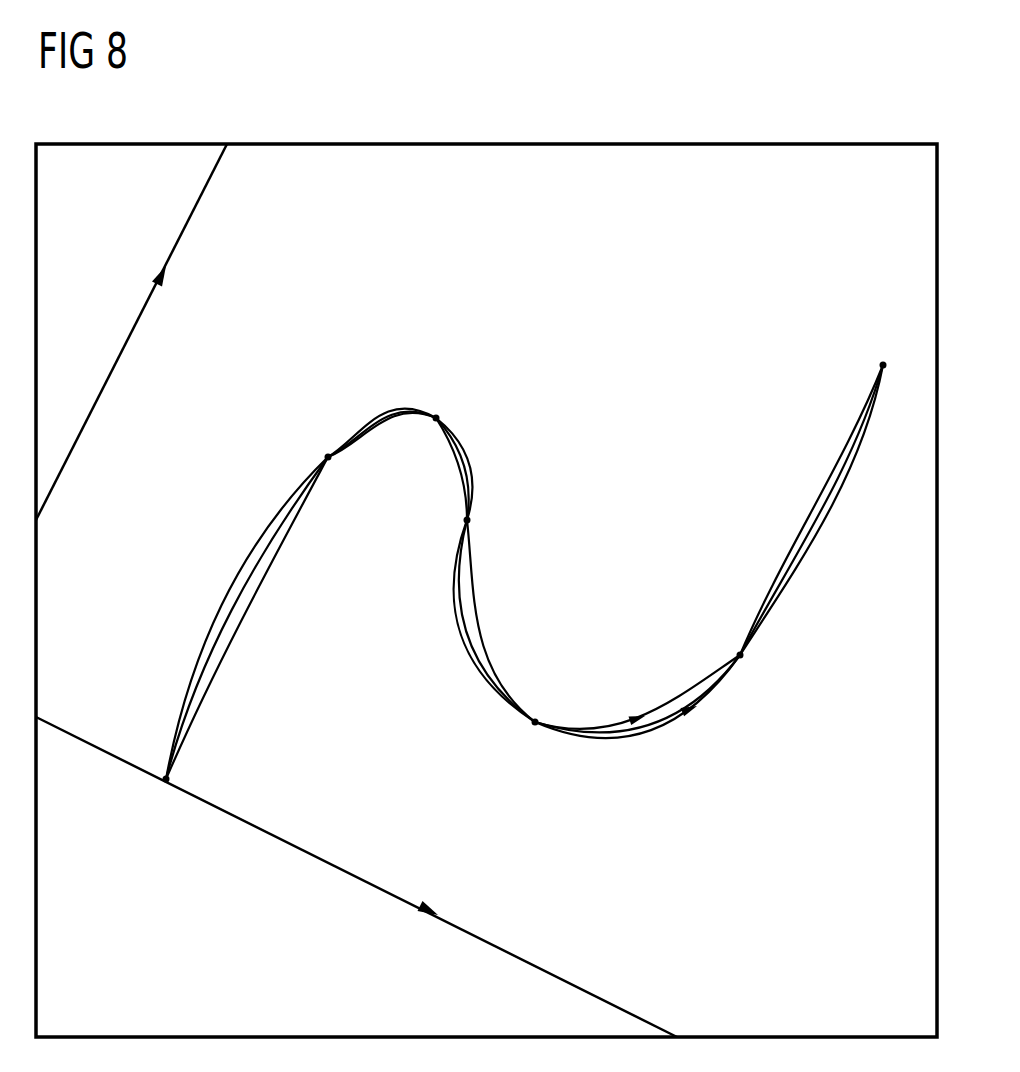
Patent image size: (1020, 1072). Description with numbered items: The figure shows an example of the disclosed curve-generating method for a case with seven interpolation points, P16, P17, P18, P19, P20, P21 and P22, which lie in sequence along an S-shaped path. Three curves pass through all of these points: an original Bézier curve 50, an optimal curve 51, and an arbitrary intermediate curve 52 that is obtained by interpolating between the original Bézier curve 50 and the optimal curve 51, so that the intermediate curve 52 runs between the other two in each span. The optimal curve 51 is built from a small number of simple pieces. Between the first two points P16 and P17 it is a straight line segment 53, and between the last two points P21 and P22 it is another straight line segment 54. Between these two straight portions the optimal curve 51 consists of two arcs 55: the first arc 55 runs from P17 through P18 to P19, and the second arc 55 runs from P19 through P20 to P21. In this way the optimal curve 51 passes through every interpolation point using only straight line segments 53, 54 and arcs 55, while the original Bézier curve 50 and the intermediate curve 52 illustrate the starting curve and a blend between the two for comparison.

The original Bézier curve 50 is at (227, 590).
The optimal curve 51 is at (475, 480).
The intermediate curve 52 is at (213, 652).
The straight line segment 53 is at (318, 570).
The straight line segment 54 is at (803, 420).
The arc 55 is at (405, 462).
The interpolation point P16 is at (166, 803).
The interpolation point P17 is at (318, 435).
The interpolation point P18 is at (436, 398).
The interpolation point P19 is at (495, 519).
The interpolation point P20 is at (533, 745).
The interpolation point P21 is at (765, 674).
The interpolation point P22 is at (883, 346).